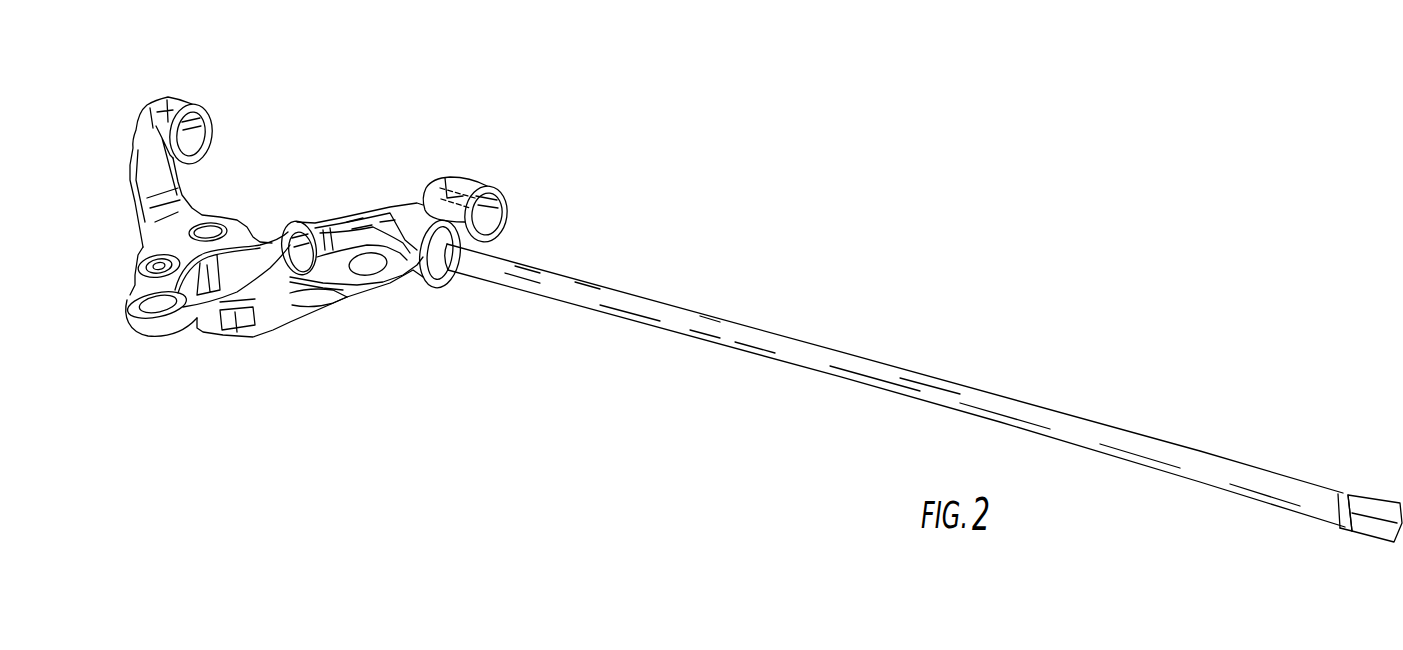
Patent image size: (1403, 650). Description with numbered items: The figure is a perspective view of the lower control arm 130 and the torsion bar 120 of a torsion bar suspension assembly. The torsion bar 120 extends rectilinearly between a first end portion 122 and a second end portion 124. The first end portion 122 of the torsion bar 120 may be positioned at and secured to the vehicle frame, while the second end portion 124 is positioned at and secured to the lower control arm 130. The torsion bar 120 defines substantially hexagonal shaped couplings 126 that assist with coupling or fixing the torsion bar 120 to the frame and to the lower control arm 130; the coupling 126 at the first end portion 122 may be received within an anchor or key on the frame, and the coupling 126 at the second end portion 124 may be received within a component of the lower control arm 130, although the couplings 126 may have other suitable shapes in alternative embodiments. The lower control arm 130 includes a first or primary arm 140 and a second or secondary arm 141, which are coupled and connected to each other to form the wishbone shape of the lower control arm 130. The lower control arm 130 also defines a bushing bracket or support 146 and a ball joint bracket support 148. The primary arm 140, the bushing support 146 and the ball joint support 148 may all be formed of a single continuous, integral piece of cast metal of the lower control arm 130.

The torsion bar 120 is at (815, 350).
The first end portion 122 is at (1340, 538).
The second end portion 124 is at (462, 283).
The substantially hexagonal shaped coupling 126 is at (1380, 507).
The lower control arm 130 is at (253, 232).
The primary arm 140 is at (317, 305).
The secondary arm 141 is at (145, 208).
The bushing support 146 is at (507, 202).
The ball joint support 148 is at (152, 322).